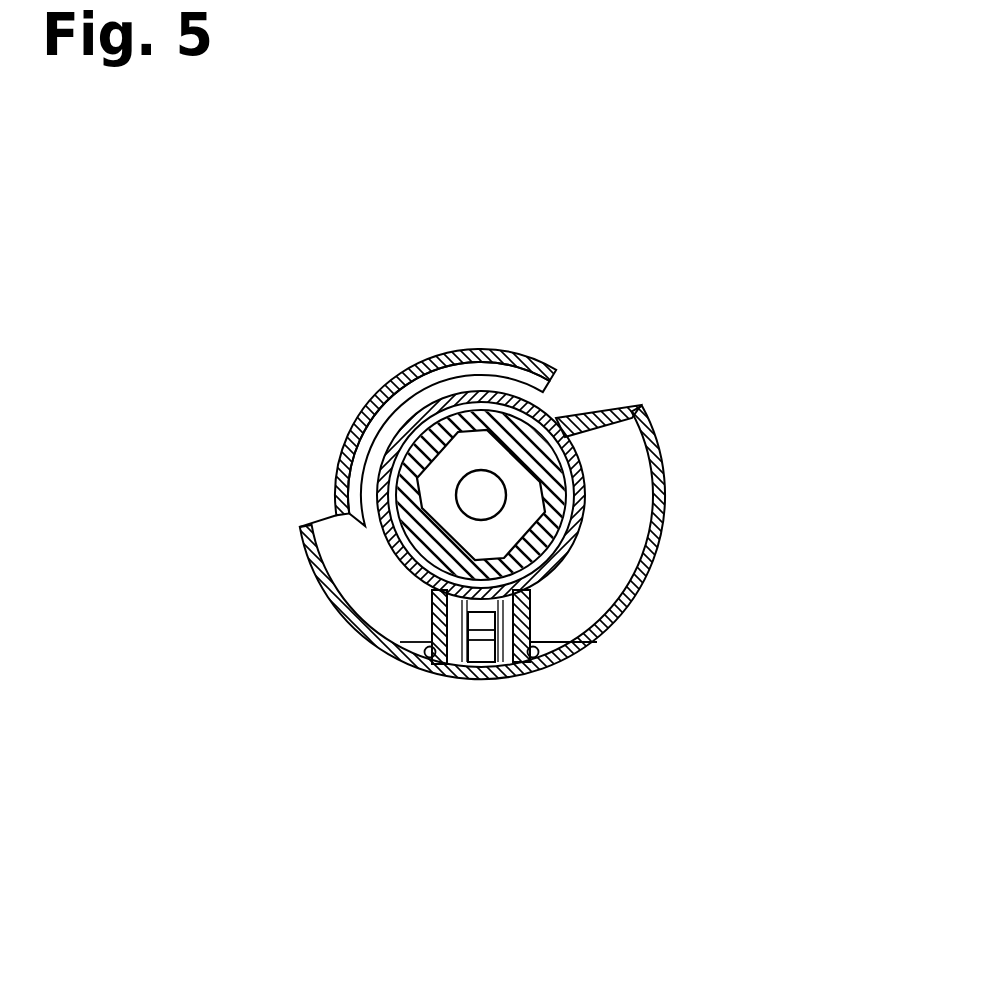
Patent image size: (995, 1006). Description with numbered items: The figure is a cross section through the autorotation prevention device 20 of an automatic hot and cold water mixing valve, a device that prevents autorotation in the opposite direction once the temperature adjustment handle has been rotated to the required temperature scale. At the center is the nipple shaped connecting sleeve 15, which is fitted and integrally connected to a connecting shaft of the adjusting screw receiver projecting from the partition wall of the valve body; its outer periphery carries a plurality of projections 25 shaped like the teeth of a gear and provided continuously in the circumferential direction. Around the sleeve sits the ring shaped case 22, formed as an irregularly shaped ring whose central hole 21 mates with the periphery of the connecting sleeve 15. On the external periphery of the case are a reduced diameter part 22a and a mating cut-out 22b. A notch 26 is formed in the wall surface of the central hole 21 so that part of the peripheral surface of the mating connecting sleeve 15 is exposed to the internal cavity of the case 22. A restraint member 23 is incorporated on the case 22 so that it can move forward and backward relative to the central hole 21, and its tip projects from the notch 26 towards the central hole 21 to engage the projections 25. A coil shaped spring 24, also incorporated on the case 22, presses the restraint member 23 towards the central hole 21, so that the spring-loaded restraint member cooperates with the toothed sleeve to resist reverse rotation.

The nipple shaped connecting sleeve 15 is at (545, 540).
The autorotation prevention device 20 is at (772, 352).
The central hole 21 is at (585, 518).
The ring shaped case 22 is at (676, 490).
The reduced diameter part 22a is at (437, 352).
The mating cut-out 22b is at (567, 413).
The restraint member 23 is at (540, 665).
The coil shaped spring 24 is at (475, 665).
The projections 25 is at (545, 550).
The notch 26 is at (405, 665).